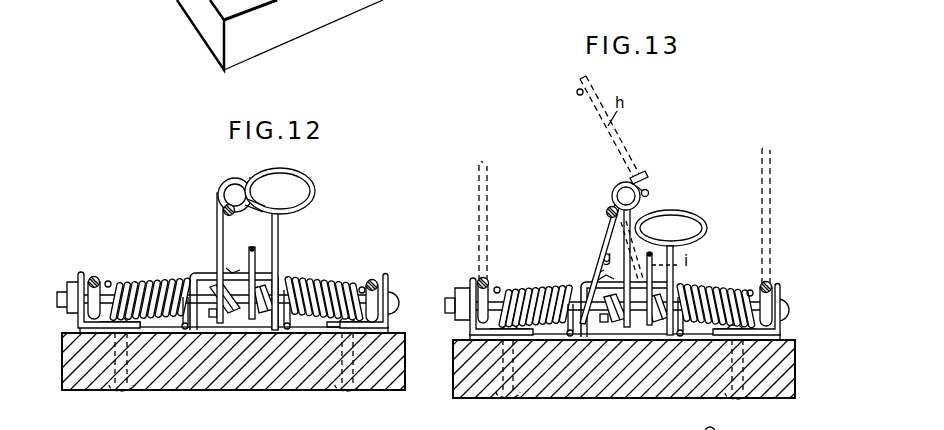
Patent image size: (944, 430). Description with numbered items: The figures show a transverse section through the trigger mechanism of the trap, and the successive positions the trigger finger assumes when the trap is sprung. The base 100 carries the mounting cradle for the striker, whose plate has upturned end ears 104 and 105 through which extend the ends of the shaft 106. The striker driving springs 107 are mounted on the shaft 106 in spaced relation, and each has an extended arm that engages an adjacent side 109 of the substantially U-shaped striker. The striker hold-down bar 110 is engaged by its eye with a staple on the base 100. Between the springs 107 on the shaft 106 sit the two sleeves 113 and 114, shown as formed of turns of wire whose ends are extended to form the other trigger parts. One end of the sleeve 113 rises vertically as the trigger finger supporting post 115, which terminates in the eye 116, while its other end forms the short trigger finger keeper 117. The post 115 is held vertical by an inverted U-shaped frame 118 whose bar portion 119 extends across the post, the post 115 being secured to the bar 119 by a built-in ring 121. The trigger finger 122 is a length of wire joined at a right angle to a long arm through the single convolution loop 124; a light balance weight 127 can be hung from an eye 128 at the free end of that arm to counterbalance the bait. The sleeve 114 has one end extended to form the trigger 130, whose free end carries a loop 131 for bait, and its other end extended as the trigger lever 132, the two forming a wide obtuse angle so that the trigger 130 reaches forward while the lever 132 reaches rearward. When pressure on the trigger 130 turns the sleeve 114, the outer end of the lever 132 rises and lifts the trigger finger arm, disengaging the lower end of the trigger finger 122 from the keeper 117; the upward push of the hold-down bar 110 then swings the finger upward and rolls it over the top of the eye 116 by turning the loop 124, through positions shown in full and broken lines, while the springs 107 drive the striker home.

In FIG. 12, the base 100 is at (398, 378).
In FIG. 13, the base 100 is at (453, 397).
In FIG. 12, the upturned end ear 104 is at (388, 277).
In FIG. 13, the upturned end ear 104 is at (781, 284).
In FIG. 12, the upturned end ear 105 is at (79, 270).
In FIG. 13, the upturned end ear 105 is at (471, 281).
In FIG. 12, the shaft 106 is at (400, 304).
In FIG. 13, the shaft 106 is at (447, 305).
In FIG. 12, the striker driving spring 107 is at (136, 266).
In FIG. 13, the striker driving spring 107 is at (535, 275).
In FIG. 12, the side of striker 109 is at (96, 278).
In FIG. 13, the side of striker 109 is at (488, 280).
In FIG. 12, the striker hold-down bar 110 is at (225, 210).
In FIG. 13, the striker hold-down bar 110 is at (607, 210).
In FIG. 12, the sleeve 113 is at (230, 313).
In FIG. 13, the sleeve 113 is at (618, 320).
In FIG. 12, the sleeve 114 is at (263, 314).
In FIG. 13, the sleeve 114 is at (658, 322).
In FIG. 12, the trigger finger supporting post 115 is at (226, 252).
In FIG. 12, the eye 116 is at (247, 210).
In FIG. 13, the eye 116 is at (646, 201).
In FIG. 12, the trigger finger keeper 117 is at (212, 318).
In FIG. 13, the trigger finger keeper 117 is at (603, 320).
In FIG. 12, the inverted U-shaped frame 118 is at (202, 268).
In FIG. 12, the bar portion 119 is at (280, 270).
In FIG. 13, the bar portion 119 is at (681, 278).
In FIG. 12, the built-in ring 121 is at (238, 270).
In FIG. 13, the built-in ring 121 is at (600, 273).
In FIG. 13, the trigger finger 122 is at (600, 231).
In FIG. 12, the single convolution loop 124 is at (223, 184).
In FIG. 13, the single convolution loop 124 is at (615, 183).
In FIG. 13, the balance weight 127 is at (773, 425).
In FIG. 12, the eye 128 is at (331, 429).
In FIG. 12, the trigger 130 is at (279, 233).
In FIG. 13, the loop 131 is at (699, 213).
In FIG. 12, the trigger lever 132 is at (258, 262).